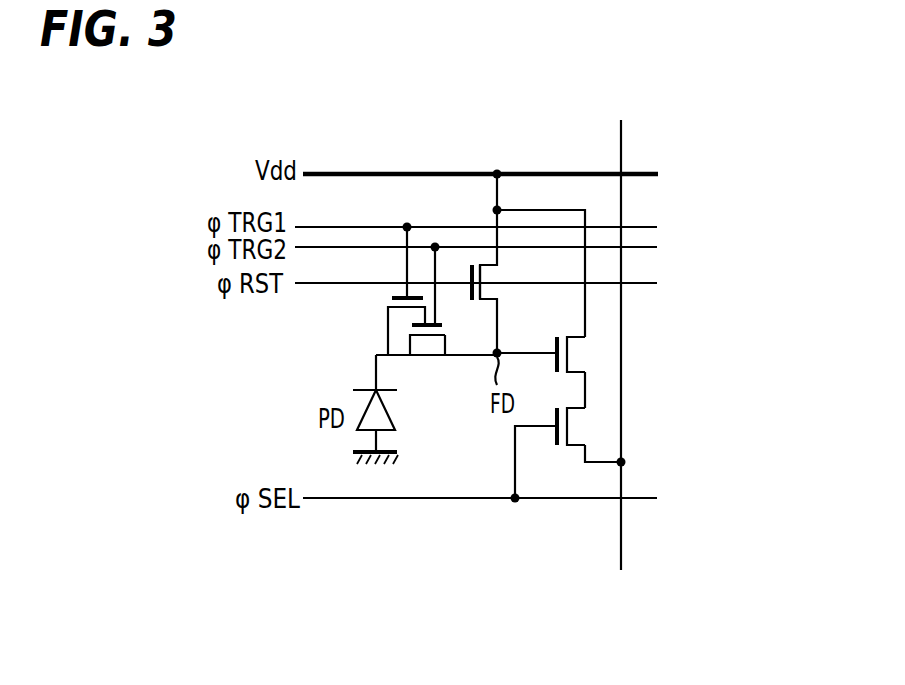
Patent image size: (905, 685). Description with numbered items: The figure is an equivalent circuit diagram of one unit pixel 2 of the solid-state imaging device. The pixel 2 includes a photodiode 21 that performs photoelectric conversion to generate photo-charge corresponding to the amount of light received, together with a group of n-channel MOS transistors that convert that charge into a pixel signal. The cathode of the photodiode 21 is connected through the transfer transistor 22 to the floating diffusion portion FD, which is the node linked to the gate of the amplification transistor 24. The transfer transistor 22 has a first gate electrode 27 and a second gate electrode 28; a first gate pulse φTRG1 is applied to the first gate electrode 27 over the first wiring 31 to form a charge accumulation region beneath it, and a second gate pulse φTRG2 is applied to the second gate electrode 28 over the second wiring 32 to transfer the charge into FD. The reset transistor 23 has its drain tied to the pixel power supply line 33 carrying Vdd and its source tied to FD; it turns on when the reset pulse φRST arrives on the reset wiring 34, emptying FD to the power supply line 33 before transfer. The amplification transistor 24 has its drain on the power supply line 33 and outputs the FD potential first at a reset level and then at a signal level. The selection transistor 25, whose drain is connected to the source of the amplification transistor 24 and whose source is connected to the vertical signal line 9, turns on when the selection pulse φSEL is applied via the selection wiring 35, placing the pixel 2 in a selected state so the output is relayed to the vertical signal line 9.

The pixel 2 is at (709, 160).
The vertical signal line 9 is at (623, 547).
The photodiode 21 is at (390, 415).
The transfer transistor 22 is at (427, 345).
The reset transistor 23 is at (493, 292).
The amplification transistor 24 is at (575, 351).
The selection transistor 25 is at (575, 425).
The first gate electrode 27 is at (390, 297).
The second gate electrode 28 is at (440, 320).
The first wiring 31 is at (648, 227).
The second wiring 32 is at (650, 247).
The pixel power supply line 33 is at (440, 172).
The reset wiring 34 is at (650, 283).
The selection wiring 35 is at (403, 500).